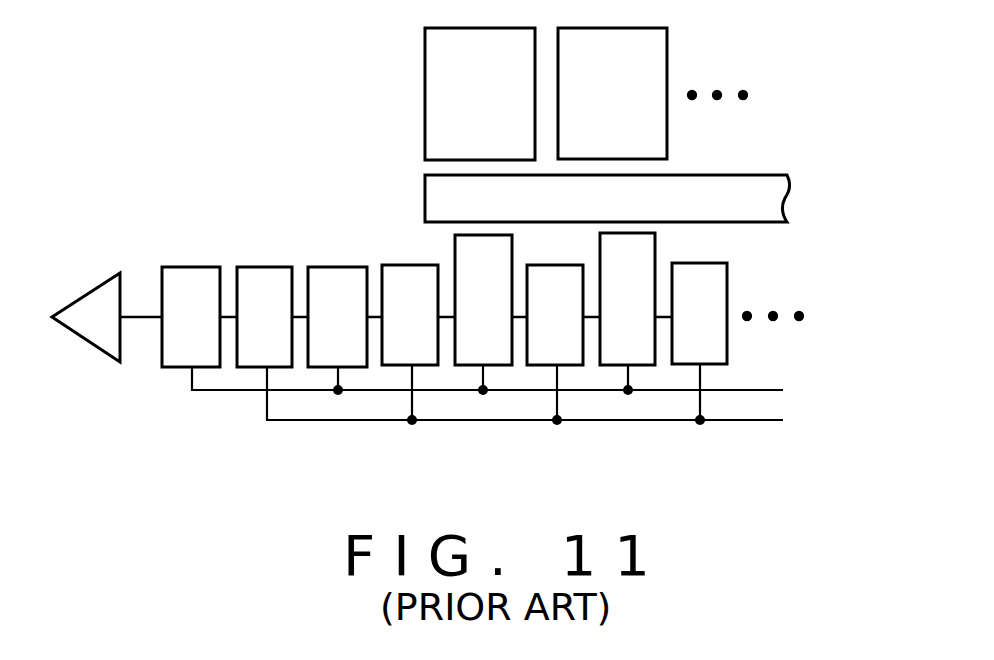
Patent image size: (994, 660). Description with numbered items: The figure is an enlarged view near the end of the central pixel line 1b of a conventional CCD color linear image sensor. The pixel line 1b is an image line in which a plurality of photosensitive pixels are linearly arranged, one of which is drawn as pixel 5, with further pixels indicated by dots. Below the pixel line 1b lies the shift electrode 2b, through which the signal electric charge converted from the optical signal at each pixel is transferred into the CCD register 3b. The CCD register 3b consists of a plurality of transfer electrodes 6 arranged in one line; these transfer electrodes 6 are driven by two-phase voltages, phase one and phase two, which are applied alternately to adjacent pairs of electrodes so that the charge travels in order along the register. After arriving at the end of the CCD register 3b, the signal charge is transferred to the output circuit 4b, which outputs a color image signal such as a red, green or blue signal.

The central pixel line 1b is at (593, 92).
The photodiode 5 is at (430, 68).
The shift electrode 2b is at (753, 200).
The CCD register 3b is at (523, 314).
The transfer electrode 6 is at (192, 267).
The output circuit 4b is at (90, 295).